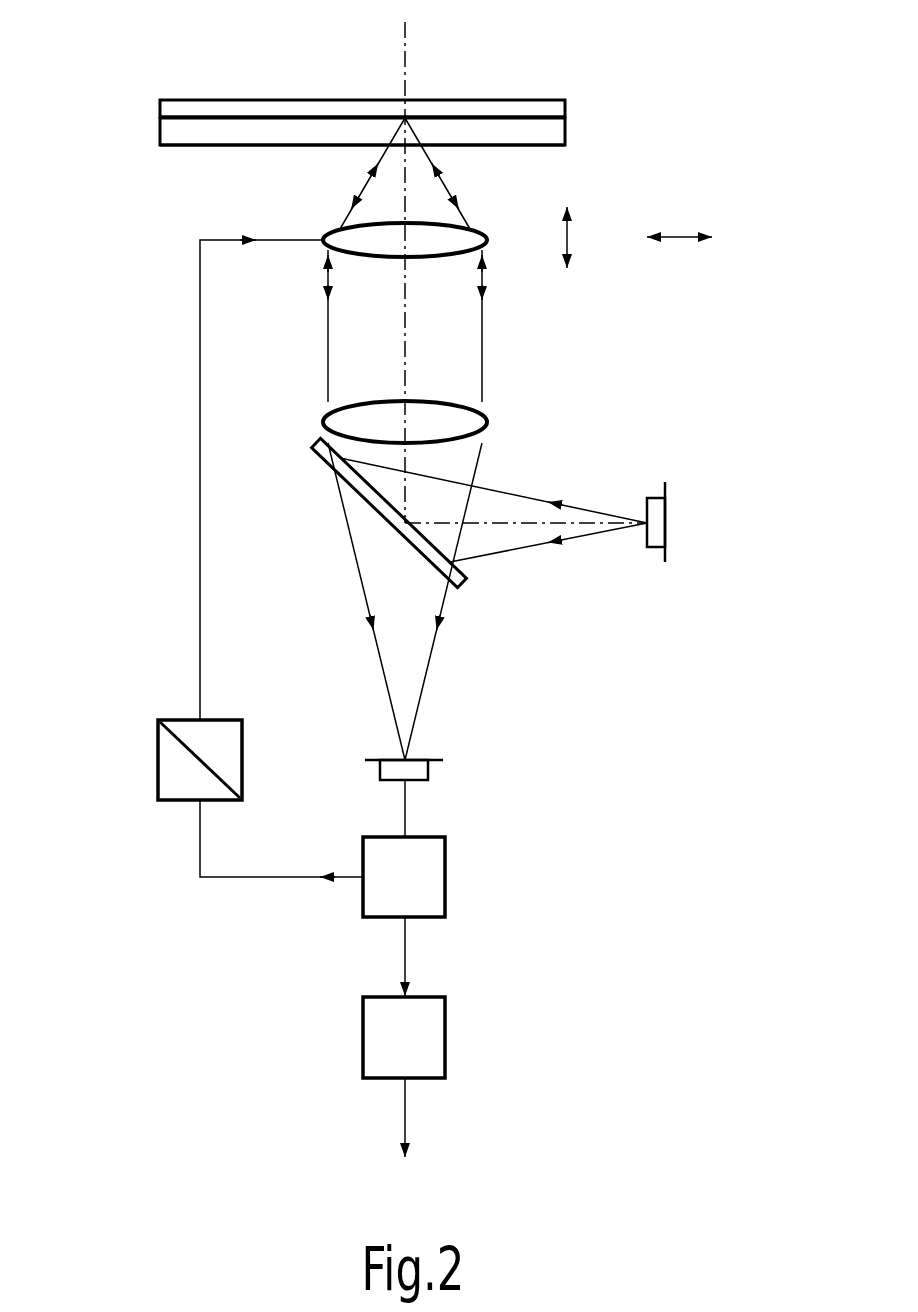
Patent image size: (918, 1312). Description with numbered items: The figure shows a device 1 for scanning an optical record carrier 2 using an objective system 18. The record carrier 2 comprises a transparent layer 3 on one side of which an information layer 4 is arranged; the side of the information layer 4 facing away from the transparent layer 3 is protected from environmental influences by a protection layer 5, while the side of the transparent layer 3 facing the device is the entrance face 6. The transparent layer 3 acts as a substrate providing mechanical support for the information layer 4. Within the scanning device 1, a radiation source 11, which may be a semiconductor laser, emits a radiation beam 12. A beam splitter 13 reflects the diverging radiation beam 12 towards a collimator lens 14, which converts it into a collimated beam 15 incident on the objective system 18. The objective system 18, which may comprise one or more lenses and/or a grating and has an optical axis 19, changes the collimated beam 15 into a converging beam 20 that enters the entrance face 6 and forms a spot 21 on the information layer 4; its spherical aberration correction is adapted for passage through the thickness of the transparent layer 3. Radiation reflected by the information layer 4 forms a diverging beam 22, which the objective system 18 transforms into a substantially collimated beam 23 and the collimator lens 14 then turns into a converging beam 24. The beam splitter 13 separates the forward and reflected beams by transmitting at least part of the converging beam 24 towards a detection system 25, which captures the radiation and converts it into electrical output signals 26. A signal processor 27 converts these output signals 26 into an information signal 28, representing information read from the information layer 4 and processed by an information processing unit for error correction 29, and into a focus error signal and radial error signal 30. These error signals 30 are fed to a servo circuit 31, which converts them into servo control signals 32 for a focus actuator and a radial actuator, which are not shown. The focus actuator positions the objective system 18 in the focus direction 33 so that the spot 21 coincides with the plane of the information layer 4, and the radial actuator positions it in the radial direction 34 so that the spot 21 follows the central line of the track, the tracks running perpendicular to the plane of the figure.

The scanning device 1 is at (92, 468).
The optical record carrier 2 is at (91, 30).
The transparent layer 3 is at (175, 130).
The information layer 4 is at (200, 116).
The protection layer 5 is at (175, 108).
The entrance face 6 is at (198, 147).
The radiation source 11 is at (667, 523).
The radiation beam 12 is at (588, 505).
The beam splitter 13 is at (328, 468).
The collimator lens 14 is at (345, 422).
The collimated beam 15 is at (327, 362).
The objective system 18 is at (347, 240).
The optical axis 19 is at (407, 42).
The converging beam 20 is at (382, 160).
The spot 21 is at (404, 117).
The diverging beam 22 is at (460, 208).
The collimated beam 23 is at (490, 287).
The converging beam 24 is at (475, 450).
The detection system 25 is at (430, 772).
The electrical output signals 26 is at (405, 817).
The signal processor 27 is at (445, 877).
The information signal 28 is at (405, 950).
The information processing unit for error correction 29 is at (447, 1040).
The focus error signal and radial error signal 30 is at (255, 880).
The servo circuit 31 is at (158, 760).
The servo control signals 32 is at (200, 526).
The focus direction 33 is at (568, 240).
The radial direction 34 is at (677, 240).